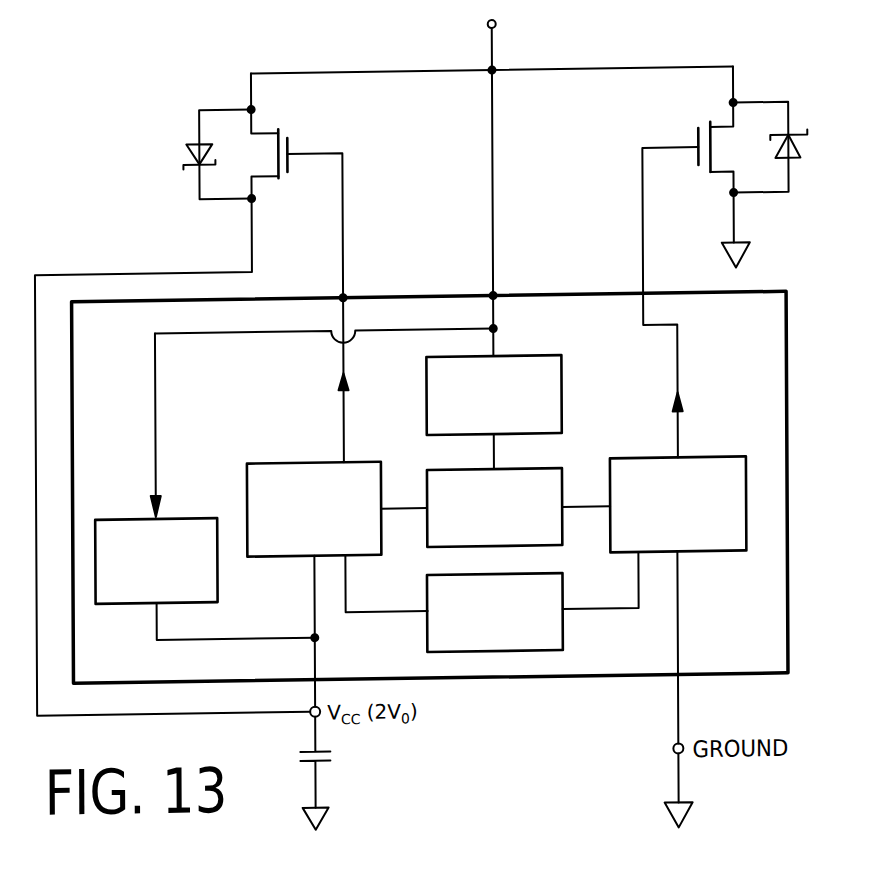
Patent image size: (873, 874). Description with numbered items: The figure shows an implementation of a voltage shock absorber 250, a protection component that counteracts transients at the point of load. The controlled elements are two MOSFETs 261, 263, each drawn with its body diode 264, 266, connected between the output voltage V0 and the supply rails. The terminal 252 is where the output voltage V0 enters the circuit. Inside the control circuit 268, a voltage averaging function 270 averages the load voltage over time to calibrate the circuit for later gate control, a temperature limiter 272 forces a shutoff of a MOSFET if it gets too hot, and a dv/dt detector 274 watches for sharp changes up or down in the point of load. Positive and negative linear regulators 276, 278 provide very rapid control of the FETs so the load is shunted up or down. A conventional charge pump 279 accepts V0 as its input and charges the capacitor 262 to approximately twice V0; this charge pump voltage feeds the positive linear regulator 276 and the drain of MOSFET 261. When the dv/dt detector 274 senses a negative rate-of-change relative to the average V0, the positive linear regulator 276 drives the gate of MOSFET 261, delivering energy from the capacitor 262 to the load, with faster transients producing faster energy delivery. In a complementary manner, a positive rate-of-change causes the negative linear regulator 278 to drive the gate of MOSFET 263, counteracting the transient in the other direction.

The voltage shock absorber 250 is at (118, 105).
The output voltage terminal V0 252 is at (490, 25).
The MOSFET 261 is at (290, 138).
The capacitor 262 is at (322, 763).
The MOSFET 263 is at (700, 139).
The body diode 264 is at (192, 162).
The body diode 266 is at (799, 140).
The control circuit 268 is at (788, 543).
The voltage averaging function 270 is at (563, 400).
The temperature limiter 272 is at (564, 625).
The dv/dt detector 274 is at (427, 487).
The positive linear regulator 276 is at (283, 461).
The negative linear regulator 278 is at (715, 557).
The charge pump 279 is at (190, 514).